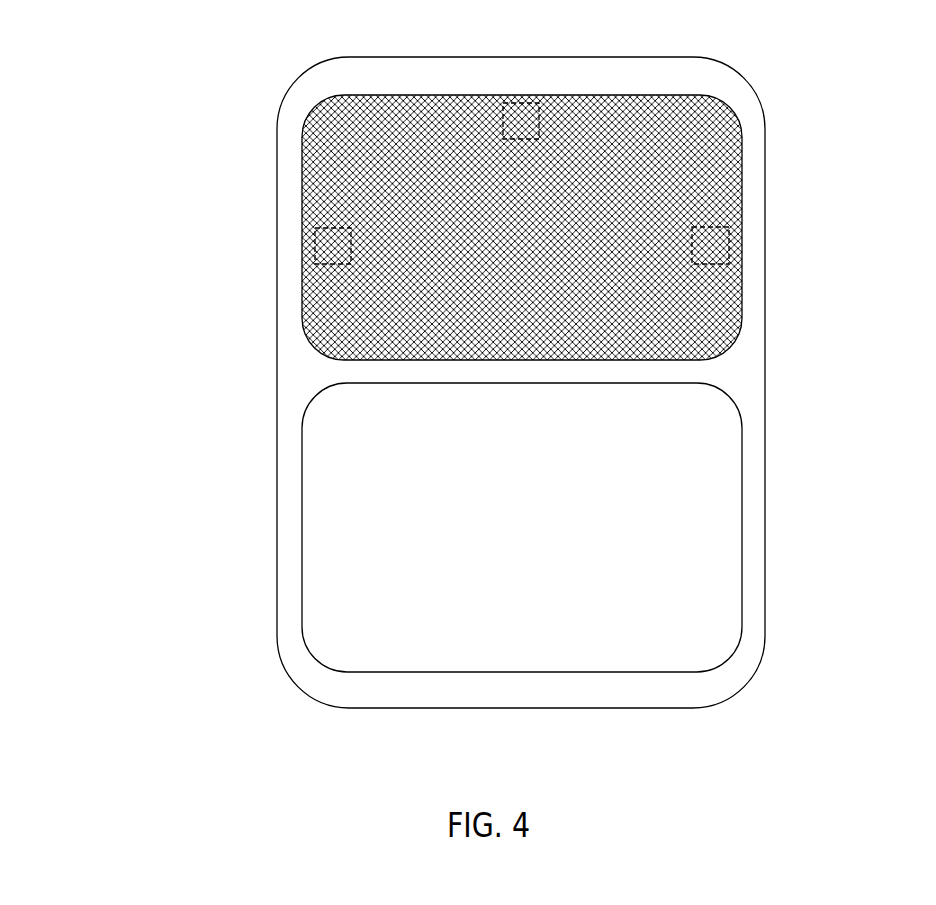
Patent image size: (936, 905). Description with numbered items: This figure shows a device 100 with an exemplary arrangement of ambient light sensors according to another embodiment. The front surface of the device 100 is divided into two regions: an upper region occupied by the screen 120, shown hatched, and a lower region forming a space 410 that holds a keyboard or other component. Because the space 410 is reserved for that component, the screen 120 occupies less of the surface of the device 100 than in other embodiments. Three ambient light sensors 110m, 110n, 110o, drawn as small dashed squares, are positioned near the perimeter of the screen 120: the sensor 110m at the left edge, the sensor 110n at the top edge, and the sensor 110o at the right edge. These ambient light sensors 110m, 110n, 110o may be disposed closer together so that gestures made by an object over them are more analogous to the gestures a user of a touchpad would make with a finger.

The device 100 is at (150, 86).
The screen 120 is at (351, 163).
The ambient light sensor 110m is at (312, 251).
The ambient light sensor 110n is at (540, 118).
The ambient light sensor 110o is at (732, 243).
The space 410 is at (524, 545).